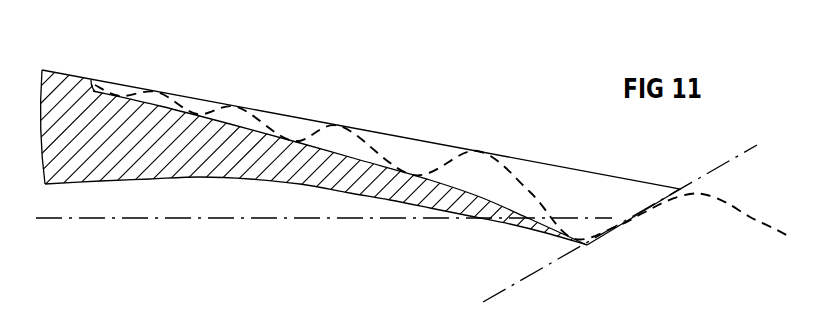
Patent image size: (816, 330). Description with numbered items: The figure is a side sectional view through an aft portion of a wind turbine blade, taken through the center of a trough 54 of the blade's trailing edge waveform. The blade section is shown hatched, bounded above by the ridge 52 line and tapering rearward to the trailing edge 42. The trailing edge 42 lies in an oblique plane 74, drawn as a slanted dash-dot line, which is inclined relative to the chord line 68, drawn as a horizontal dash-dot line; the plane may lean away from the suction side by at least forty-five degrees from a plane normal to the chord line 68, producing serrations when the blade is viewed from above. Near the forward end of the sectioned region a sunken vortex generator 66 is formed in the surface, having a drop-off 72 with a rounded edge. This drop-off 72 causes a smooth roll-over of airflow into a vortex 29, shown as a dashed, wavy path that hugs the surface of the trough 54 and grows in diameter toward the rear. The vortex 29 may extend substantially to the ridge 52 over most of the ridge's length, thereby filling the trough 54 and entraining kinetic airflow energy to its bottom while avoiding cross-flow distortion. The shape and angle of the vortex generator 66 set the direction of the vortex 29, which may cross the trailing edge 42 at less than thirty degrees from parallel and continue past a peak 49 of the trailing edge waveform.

The sunken vortex generator 66 is at (94, 63).
The drop-off 72 is at (109, 85).
The trough 54 is at (340, 152).
The ridge 52 is at (423, 142).
The vortex 29 is at (523, 181).
The peak 49 is at (680, 188).
The trailing edge 42 is at (603, 235).
The chord line 68 is at (194, 219).
The oblique plane 74 is at (519, 283).